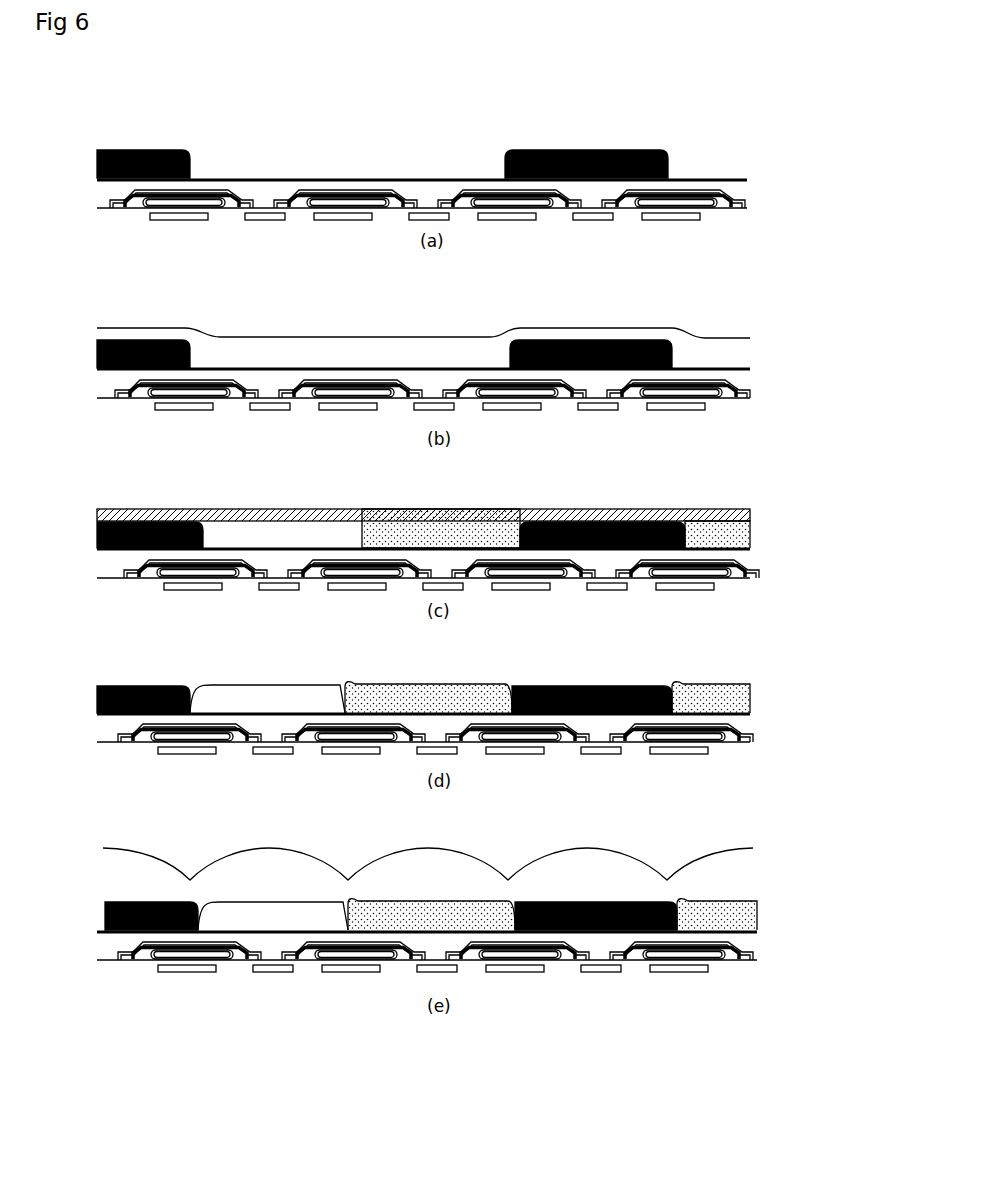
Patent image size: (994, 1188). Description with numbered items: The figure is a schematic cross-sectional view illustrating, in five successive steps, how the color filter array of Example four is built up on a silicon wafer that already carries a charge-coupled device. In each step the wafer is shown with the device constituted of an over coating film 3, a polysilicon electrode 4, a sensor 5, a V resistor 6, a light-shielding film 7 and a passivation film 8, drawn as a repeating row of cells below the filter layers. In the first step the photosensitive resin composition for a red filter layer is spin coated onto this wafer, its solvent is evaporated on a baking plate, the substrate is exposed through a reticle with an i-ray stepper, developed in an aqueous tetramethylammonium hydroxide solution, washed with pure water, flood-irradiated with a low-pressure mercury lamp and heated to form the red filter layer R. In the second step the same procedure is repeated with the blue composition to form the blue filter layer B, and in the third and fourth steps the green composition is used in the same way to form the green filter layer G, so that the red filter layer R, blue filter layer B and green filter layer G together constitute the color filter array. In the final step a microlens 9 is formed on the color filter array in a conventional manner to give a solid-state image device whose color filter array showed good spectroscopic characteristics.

The red filter layer R is at (670, 158).
The blue filter layer B is at (747, 348).
The green filter layer G is at (747, 518).
The over coating film 3 is at (757, 193).
The polysilicon electrode 4 is at (717, 210).
The sensor 5 is at (600, 218).
The V resistor 6 is at (673, 217).
The light-shielding film 7 is at (710, 207).
The passivation film 8 is at (720, 192).
The microlens 9 is at (728, 875).